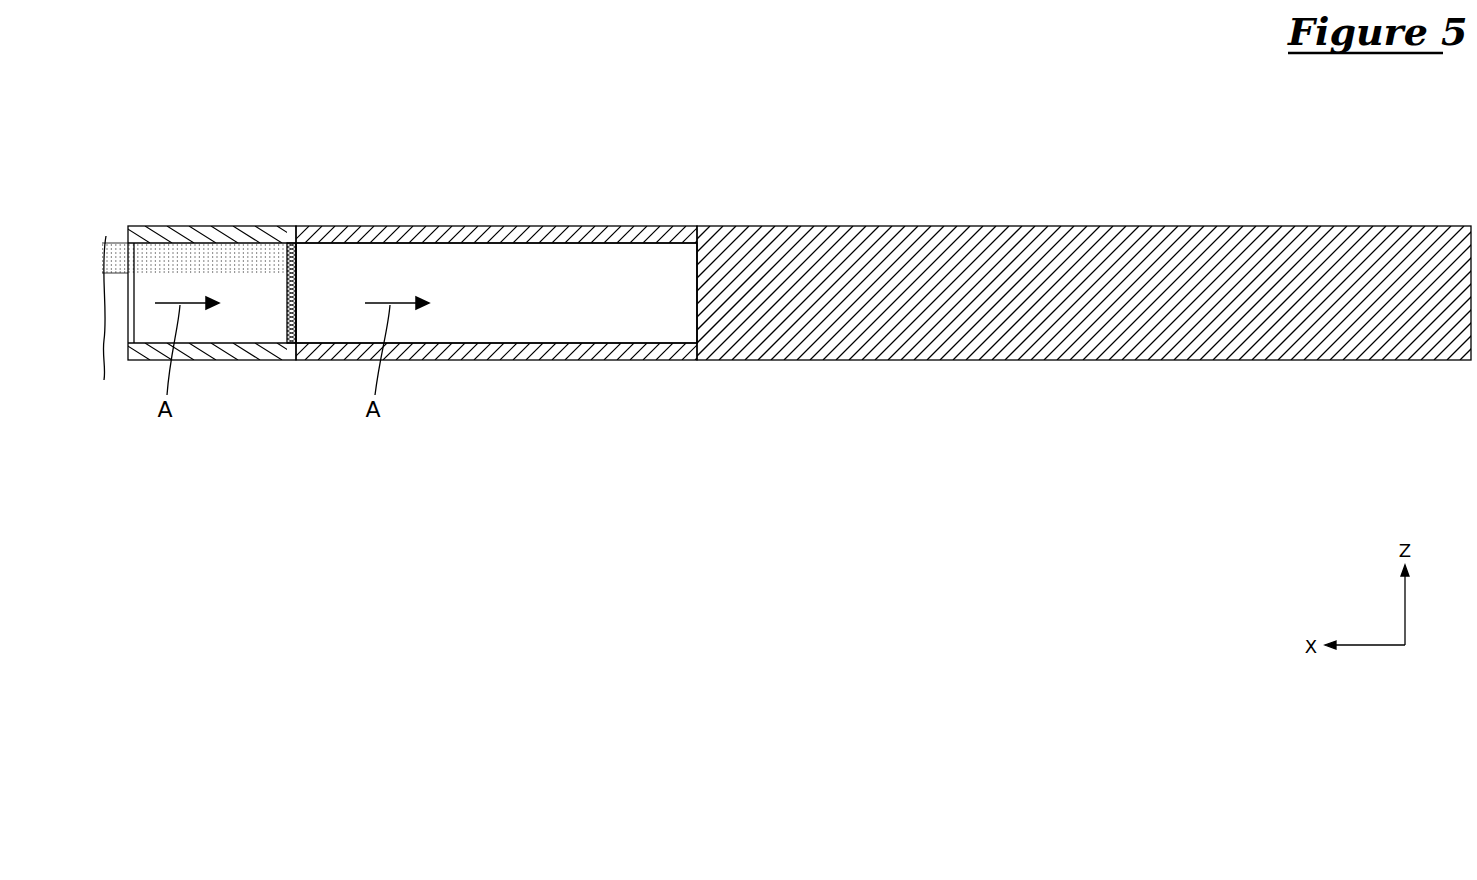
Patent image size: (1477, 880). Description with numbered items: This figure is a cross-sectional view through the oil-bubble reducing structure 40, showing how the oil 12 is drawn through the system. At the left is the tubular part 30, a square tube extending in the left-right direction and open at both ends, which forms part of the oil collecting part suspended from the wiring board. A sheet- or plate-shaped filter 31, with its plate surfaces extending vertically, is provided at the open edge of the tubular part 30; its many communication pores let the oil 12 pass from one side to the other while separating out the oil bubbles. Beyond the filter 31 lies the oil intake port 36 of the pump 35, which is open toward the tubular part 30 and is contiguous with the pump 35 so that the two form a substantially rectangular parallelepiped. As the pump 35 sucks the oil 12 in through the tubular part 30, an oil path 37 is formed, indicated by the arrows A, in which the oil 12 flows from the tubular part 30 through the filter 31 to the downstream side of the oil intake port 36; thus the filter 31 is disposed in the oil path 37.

The oil 12 is at (115, 248).
The tubular part 30 is at (210, 350).
The filter 31 is at (287, 302).
The oil-bubble reducing structure 40 is at (286, 436).
The oil intake port 36 is at (298, 252).
The oil path 37 is at (552, 344).
The pump 35 is at (988, 343).